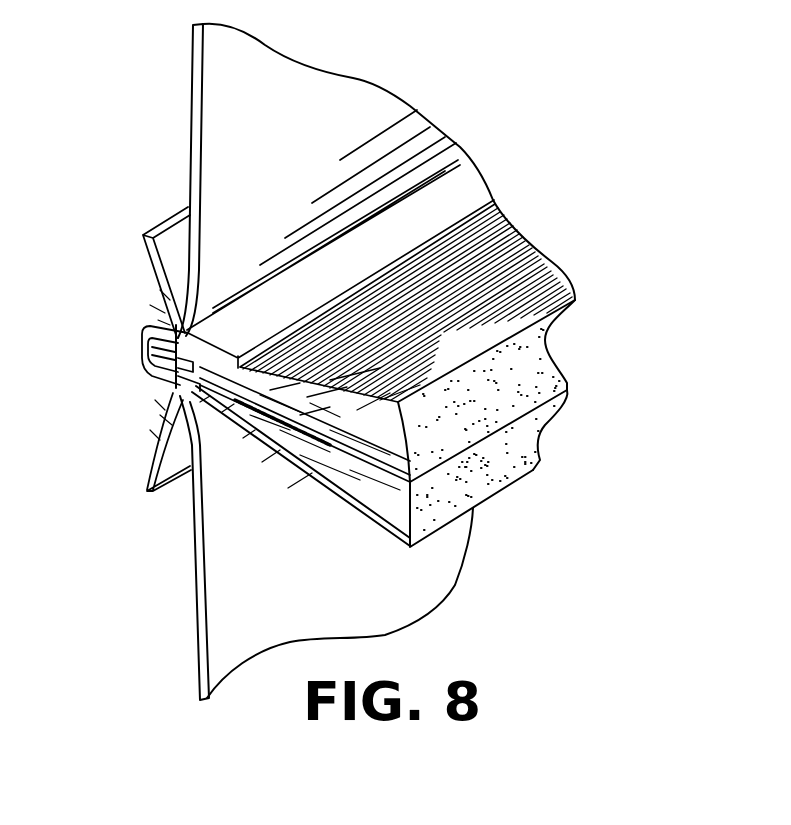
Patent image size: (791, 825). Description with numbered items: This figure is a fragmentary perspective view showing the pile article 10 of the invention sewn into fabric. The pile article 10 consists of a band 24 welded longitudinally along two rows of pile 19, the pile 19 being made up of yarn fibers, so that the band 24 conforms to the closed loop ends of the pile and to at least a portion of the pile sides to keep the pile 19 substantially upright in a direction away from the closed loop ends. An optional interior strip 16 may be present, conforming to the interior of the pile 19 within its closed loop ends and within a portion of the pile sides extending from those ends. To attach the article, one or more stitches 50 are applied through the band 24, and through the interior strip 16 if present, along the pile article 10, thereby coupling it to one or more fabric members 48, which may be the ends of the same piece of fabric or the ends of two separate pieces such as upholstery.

The pile article 10 is at (320, 486).
The interior strip 16 is at (162, 381).
The pile 19 is at (472, 479).
The band 24 is at (234, 404).
The fabric members 48 is at (188, 117).
The stitches 50 is at (167, 326).